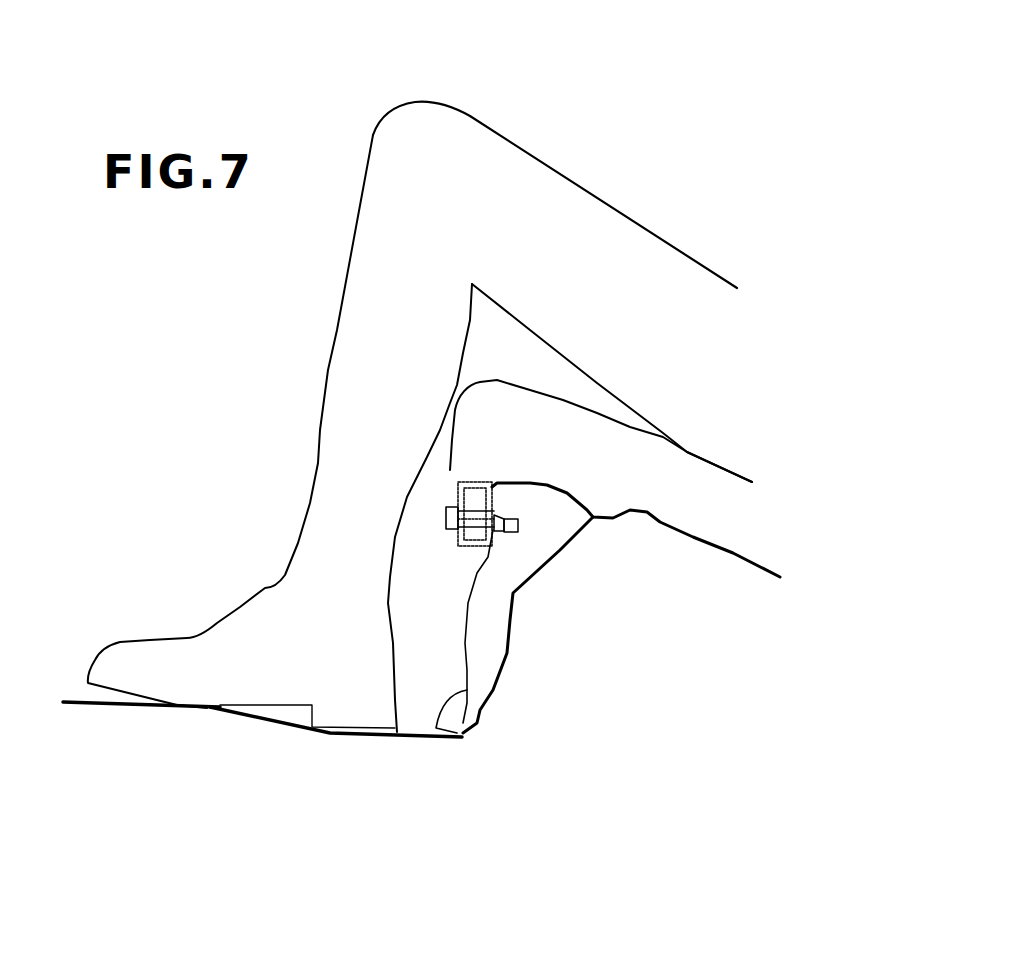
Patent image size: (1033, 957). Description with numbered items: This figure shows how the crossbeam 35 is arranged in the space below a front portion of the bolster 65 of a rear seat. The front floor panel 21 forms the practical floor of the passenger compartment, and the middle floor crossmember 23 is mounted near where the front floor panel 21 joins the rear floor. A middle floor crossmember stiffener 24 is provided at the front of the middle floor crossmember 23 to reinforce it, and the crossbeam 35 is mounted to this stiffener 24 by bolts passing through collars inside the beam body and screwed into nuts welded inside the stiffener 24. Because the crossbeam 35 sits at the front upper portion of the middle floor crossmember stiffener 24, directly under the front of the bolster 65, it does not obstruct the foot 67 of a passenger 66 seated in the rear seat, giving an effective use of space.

The front floor panel 21 is at (78, 702).
The middle floor crossmember 23 is at (510, 628).
The middle floor crossmember stiffener 24 is at (433, 730).
The crossbeam 35 is at (453, 553).
The bolster 65 is at (573, 400).
The passenger 66 is at (607, 193).
The foot 67 is at (328, 663).